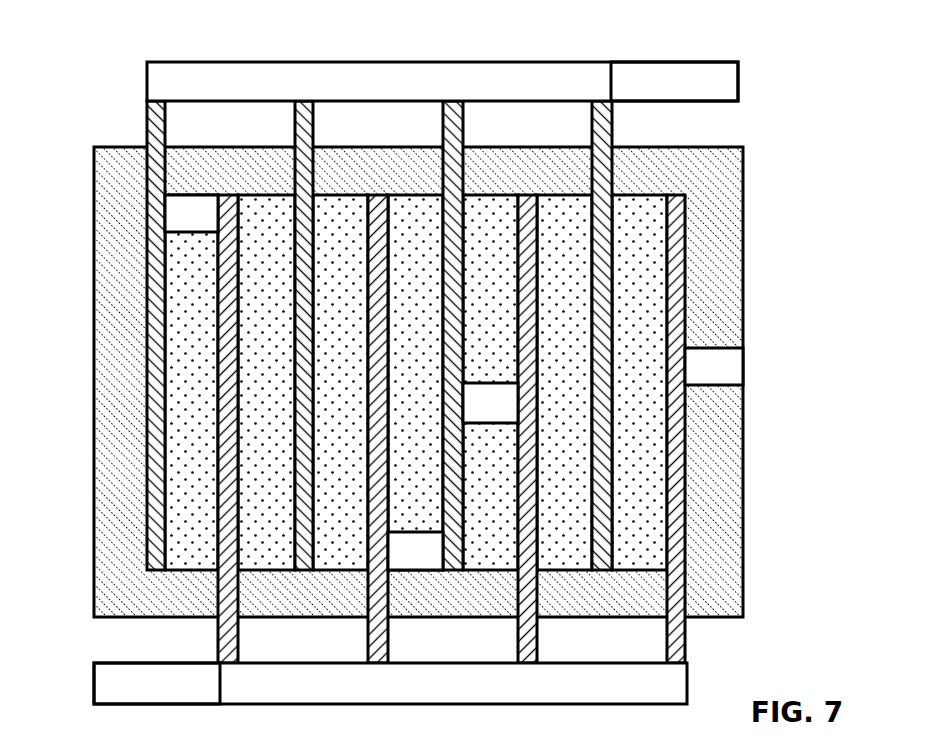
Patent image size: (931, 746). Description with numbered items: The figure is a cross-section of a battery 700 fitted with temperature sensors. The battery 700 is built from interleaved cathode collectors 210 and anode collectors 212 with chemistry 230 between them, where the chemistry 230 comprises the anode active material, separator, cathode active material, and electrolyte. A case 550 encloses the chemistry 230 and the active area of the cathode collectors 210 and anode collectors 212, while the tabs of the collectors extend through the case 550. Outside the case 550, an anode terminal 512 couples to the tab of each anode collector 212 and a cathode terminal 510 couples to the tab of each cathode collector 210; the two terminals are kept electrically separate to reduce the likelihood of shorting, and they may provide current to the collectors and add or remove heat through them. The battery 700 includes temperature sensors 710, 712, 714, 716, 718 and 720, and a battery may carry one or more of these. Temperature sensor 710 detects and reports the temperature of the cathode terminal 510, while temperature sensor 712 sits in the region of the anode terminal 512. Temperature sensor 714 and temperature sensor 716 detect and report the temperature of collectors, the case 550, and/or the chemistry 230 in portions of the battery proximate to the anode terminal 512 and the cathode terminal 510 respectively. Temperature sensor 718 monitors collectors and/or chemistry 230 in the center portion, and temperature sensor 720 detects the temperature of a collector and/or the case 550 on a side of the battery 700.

The battery 700 is at (112, 40).
The anode terminal 512 is at (147, 81).
The temperature sensor 712 is at (656, 95).
The anode collector 212 is at (147, 129).
The cathode collector 210 is at (218, 651).
The chemistry 230 is at (173, 354).
The case 550 is at (99, 261).
The temperature sensor 714 is at (173, 227).
The temperature sensor 716 is at (396, 566).
The temperature sensor 718 is at (471, 417).
The temperature sensor 720 is at (695, 381).
The cathode terminal 510 is at (688, 684).
The temperature sensor 710 is at (138, 697).